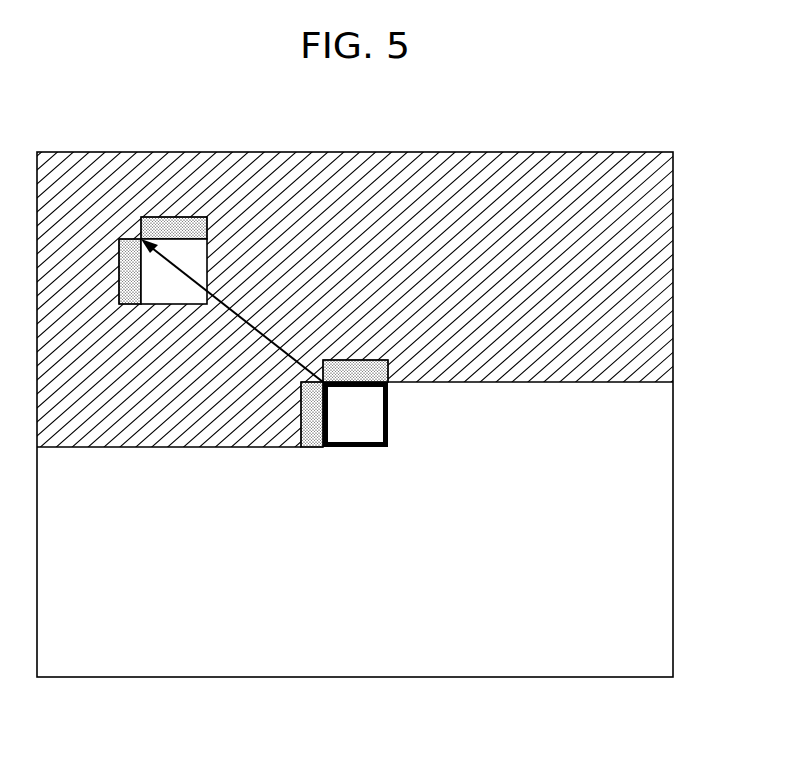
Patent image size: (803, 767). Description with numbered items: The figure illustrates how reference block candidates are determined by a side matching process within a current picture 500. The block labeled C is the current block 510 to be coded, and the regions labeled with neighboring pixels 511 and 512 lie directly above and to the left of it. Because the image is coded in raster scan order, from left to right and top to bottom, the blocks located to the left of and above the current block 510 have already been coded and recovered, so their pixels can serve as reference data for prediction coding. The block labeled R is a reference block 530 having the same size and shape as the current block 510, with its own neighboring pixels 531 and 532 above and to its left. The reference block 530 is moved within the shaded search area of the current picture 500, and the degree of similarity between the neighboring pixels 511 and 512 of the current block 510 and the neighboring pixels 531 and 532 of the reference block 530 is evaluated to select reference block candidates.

The current picture 500 is at (673, 523).
The current block 510 is at (355, 437).
The neighboring pixels of the current block 511 is at (387, 360).
The neighboring pixels of the current block 512 is at (312, 413).
The reference block 530 is at (174, 295).
The neighboring pixels of the reference block 531 is at (210, 218).
The neighboring pixels of the reference block 532 is at (130, 272).